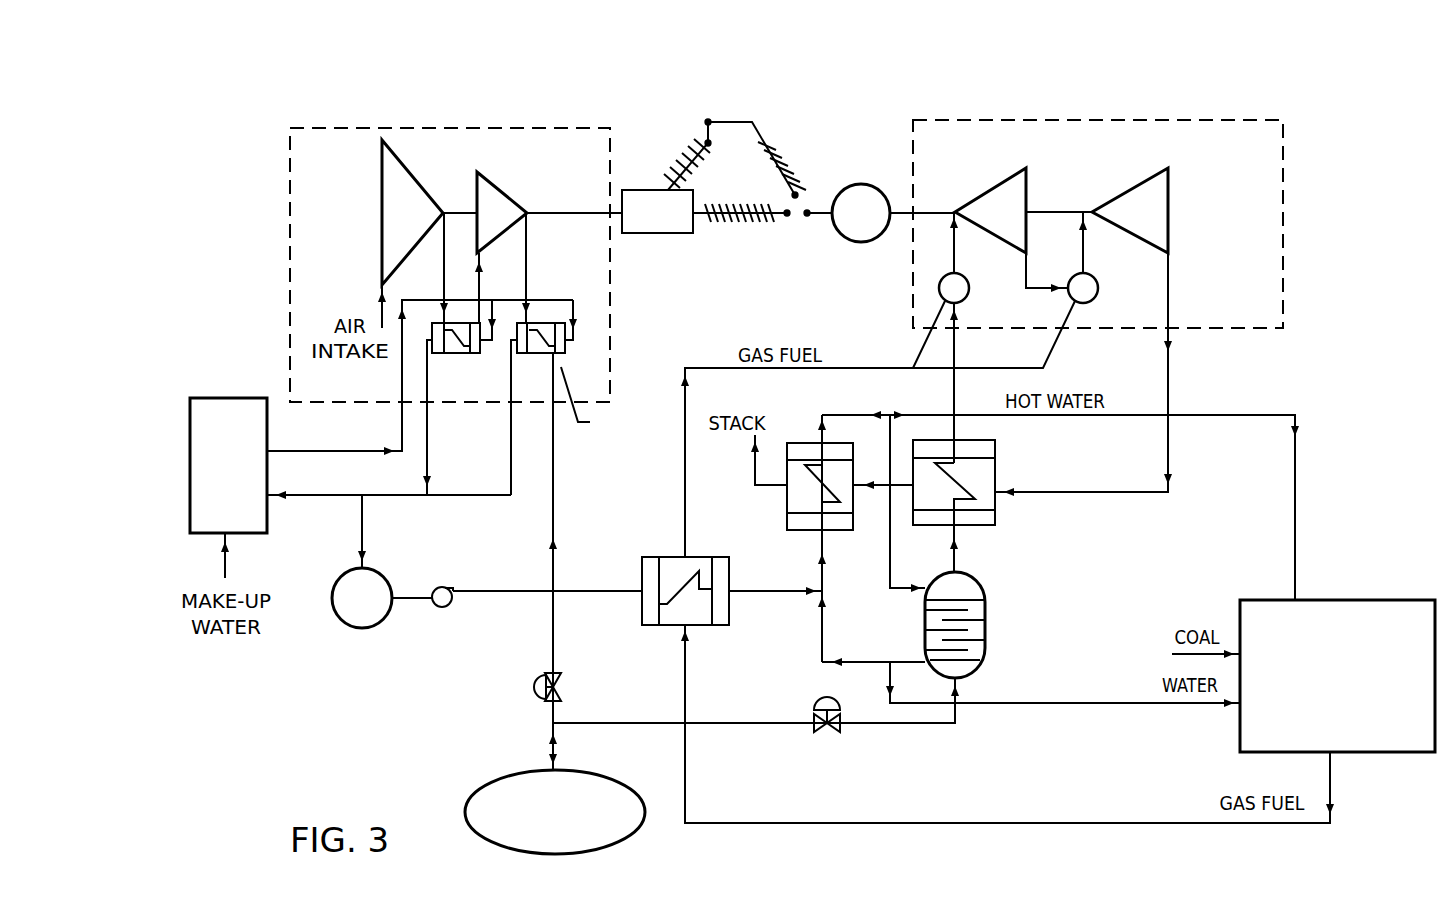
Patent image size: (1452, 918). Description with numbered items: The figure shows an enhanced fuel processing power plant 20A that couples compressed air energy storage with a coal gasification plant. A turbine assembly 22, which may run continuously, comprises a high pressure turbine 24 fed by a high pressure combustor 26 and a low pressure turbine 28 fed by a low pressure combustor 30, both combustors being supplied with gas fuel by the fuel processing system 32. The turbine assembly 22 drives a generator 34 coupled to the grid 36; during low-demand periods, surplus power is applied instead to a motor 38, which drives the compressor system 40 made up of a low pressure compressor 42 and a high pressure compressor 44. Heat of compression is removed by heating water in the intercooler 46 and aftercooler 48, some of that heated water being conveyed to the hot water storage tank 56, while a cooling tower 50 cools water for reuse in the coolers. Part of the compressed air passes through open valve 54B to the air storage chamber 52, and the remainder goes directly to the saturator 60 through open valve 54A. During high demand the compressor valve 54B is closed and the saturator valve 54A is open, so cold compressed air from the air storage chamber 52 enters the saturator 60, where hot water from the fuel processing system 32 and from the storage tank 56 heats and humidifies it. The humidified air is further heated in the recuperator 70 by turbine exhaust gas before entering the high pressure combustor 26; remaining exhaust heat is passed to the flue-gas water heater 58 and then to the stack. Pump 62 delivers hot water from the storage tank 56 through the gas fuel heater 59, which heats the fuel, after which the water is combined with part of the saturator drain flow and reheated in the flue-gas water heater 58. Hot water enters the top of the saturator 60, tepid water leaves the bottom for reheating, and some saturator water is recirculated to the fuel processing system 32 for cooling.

The enhanced fuel processing power plant 20A is at (528, 75).
The turbine assembly 22 is at (1078, 100).
The high pressure turbine 24 is at (1020, 190).
The high pressure combustor 26 is at (940, 280).
The low pressure turbine 28 is at (1170, 203).
The low pressure combustor 30 is at (1090, 272).
The fuel processing system 32 is at (1333, 600).
The generator 34 is at (860, 183).
The grid 36 is at (750, 122).
The motor 38 is at (660, 233).
The compressor system 40 is at (372, 118).
The low pressure compressor 42 is at (395, 204).
The high pressure compressor 44 is at (513, 200).
The intercooler 46 is at (440, 322).
The aftercooler 48 is at (540, 322).
The cooling tower 50 is at (190, 482).
The air storage chamber 52 is at (618, 843).
The saturator valve 54A is at (827, 735).
The compressor valve 54B is at (563, 687).
The hot water storage tank 56 is at (352, 628).
The flue-gas water heater 58 is at (787, 512).
The gas fuel heater 59 is at (730, 576).
The saturator 60 is at (985, 633).
The pump 62 is at (442, 607).
The recuperator 70 is at (1000, 520).